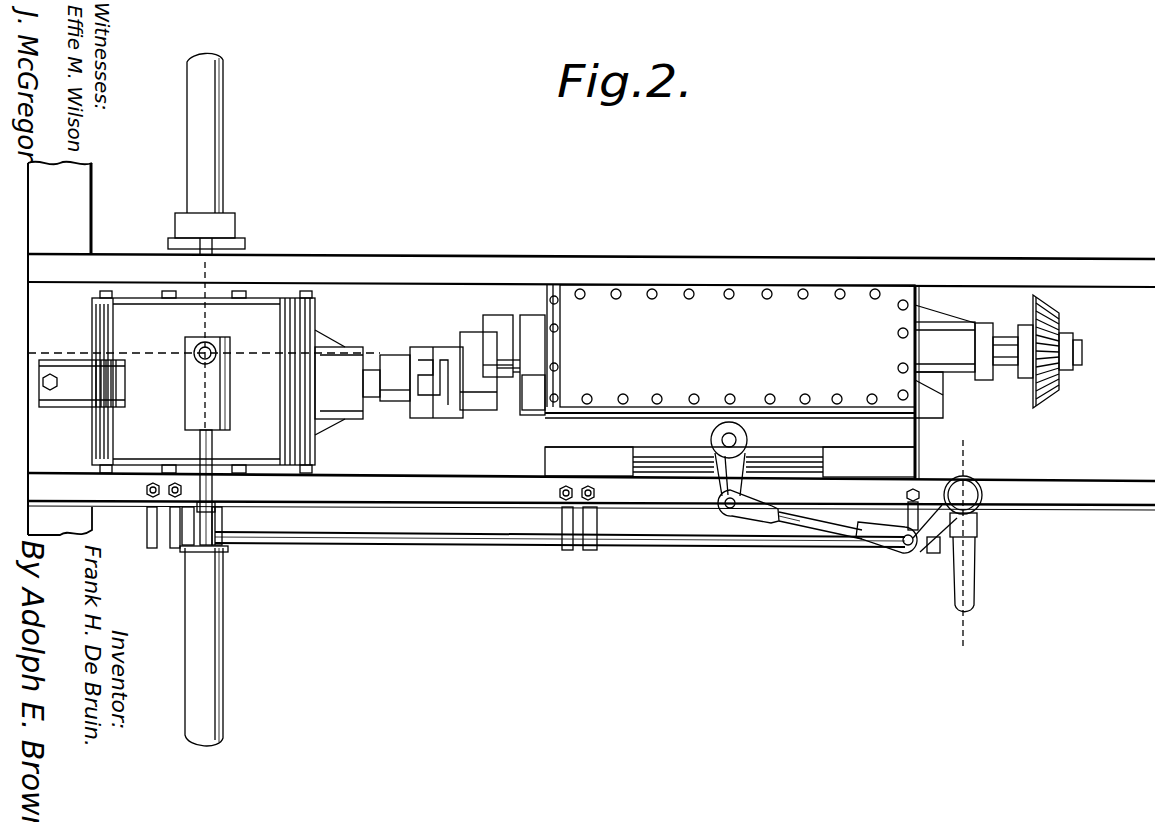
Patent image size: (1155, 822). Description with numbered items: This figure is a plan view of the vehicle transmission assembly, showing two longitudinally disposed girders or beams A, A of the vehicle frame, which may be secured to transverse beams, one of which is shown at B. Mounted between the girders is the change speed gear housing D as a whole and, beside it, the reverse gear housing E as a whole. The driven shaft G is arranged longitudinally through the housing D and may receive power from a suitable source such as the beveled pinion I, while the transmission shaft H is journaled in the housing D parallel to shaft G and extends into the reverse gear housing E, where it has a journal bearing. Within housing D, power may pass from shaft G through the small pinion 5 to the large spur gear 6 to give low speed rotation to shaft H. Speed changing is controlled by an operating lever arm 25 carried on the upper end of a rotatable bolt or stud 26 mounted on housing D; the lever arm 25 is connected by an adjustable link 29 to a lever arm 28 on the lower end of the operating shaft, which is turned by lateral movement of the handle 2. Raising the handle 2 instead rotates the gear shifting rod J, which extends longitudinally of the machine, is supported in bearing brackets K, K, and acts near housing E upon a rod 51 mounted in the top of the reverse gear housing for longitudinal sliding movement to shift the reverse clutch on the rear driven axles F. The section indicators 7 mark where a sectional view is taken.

The longitudinally disposed girders or beams A is at (450, 254).
The transverse beam B is at (82, 362).
The change speed gear housing D is at (732, 382).
The reverse gear housing E is at (227, 367).
The rear driven axles F is at (210, 148).
The driven shaft G is at (466, 340).
The transmission shaft H is at (372, 400).
The beveled pinion I is at (1047, 392).
The gear shifting rod J is at (690, 540).
The bearing brackets K is at (150, 524).
The handle 2 is at (964, 544).
The small pinion 5 is at (14, 386).
The large spur gear 6 is at (218, 268).
The section line 7- 7 is at (922, 451).
The operating lever arm 25 is at (728, 482).
The rotatable bolt or stud 26 is at (737, 440).
The lever arm 28 is at (925, 540).
The adjustable link 29 is at (820, 530).
The rod 51 is at (205, 444).